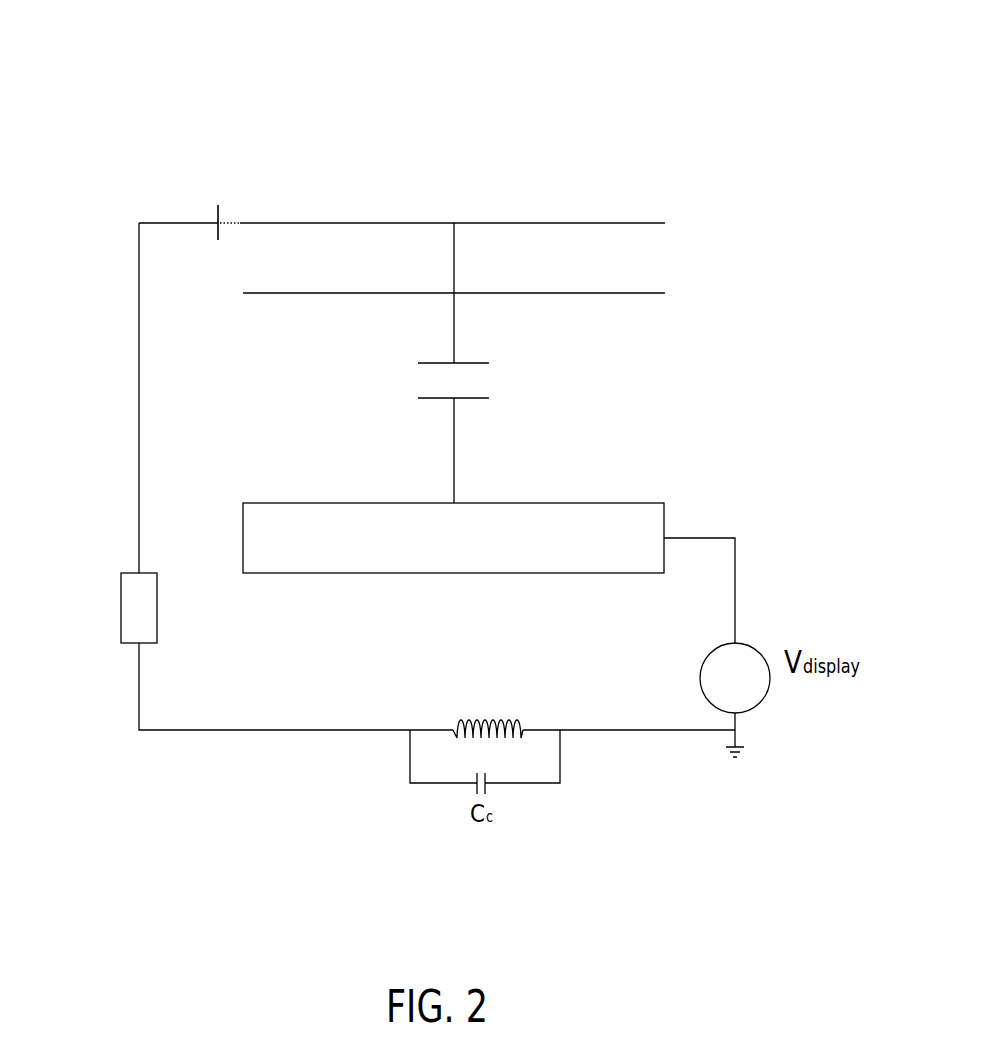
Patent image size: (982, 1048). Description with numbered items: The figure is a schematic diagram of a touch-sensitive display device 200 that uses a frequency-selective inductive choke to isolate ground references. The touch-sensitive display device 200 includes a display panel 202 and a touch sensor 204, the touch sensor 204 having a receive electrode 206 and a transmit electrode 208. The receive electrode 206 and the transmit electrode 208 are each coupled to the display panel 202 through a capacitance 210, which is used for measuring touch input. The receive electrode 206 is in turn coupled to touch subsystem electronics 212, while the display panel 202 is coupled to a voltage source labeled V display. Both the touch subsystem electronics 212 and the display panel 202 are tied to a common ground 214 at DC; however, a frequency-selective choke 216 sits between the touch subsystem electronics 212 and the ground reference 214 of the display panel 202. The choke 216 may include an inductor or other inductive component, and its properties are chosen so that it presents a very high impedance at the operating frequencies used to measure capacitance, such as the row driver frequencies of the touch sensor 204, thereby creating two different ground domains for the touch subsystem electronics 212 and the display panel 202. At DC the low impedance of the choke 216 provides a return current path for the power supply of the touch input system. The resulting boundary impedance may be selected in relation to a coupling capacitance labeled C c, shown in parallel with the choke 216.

The touch-sensitive display device 200 is at (103, 47).
The display panel 202 is at (470, 550).
The touch sensor 204 is at (637, 207).
The receive electrode 206 is at (305, 223).
The transmit electrode 208 is at (295, 293).
The capacitance 210 is at (478, 362).
The touch subsystem electronics 212 is at (131, 573).
The common ground 214 is at (740, 744).
The frequency-selective choke 216 is at (481, 715).